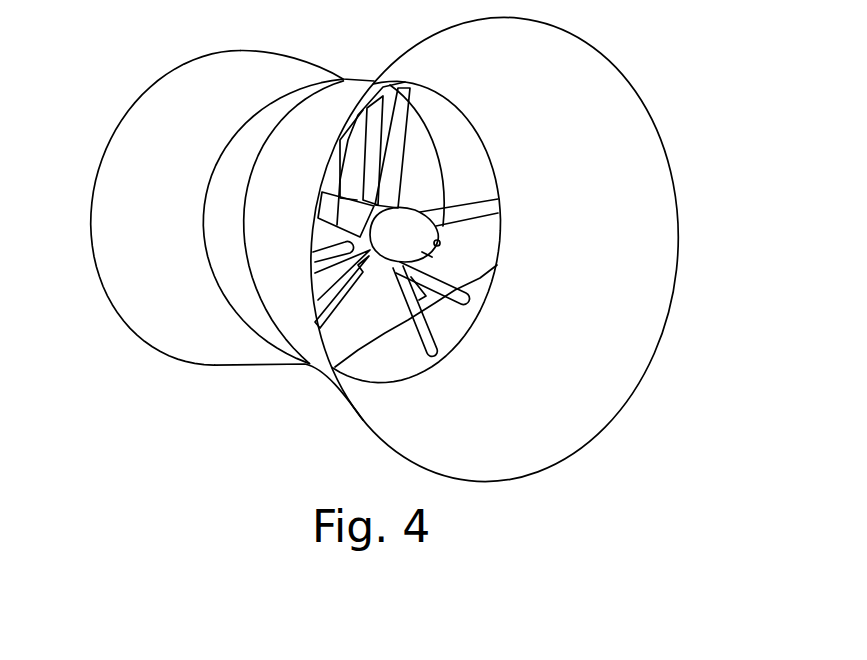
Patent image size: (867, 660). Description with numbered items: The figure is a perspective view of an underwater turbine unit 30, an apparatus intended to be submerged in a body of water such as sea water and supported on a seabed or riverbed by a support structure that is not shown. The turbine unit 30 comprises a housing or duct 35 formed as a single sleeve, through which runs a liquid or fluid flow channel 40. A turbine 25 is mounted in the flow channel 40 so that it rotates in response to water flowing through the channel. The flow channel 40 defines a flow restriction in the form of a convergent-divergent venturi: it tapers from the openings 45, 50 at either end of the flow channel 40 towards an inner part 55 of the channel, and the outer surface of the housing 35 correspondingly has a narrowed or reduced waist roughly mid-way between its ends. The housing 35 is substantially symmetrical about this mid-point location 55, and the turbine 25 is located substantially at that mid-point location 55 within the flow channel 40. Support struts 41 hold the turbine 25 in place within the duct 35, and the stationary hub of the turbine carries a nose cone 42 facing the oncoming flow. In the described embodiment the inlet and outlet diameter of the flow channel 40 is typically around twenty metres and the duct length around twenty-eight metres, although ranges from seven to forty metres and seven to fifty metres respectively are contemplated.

The turbine 25 is at (482, 192).
The turbine unit 30 is at (651, 53).
The housing 35 is at (506, 447).
The flow channel 40 is at (383, 326).
The support struts 41 is at (377, 107).
The nose cone 42 is at (440, 259).
The opening 45 is at (656, 245).
The opening 50 is at (158, 64).
The inner part 55 is at (237, 238).